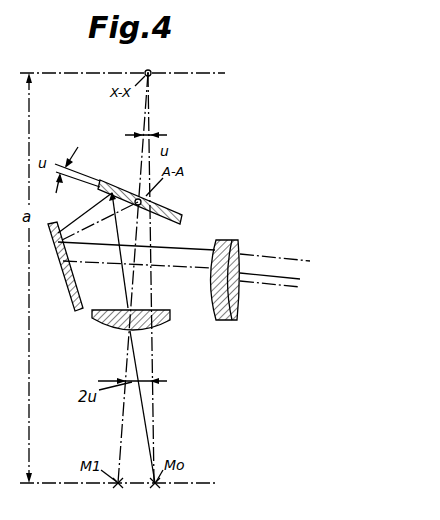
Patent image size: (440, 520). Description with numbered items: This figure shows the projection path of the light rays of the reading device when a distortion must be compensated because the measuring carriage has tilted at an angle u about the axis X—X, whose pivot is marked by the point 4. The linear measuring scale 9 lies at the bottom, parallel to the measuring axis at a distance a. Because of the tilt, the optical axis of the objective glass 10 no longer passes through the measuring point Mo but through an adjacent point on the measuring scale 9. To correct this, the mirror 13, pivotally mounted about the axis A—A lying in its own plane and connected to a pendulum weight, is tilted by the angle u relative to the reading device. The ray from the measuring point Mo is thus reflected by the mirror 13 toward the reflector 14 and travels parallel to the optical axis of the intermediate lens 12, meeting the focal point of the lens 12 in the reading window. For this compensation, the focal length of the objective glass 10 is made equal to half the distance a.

The point 4 is at (151, 76).
The mirror 13 is at (157, 211).
The reflector 14 is at (67, 288).
The objective glass 10 is at (106, 329).
The intermediate lens 12 is at (228, 320).
The measuring scale 9 is at (200, 483).